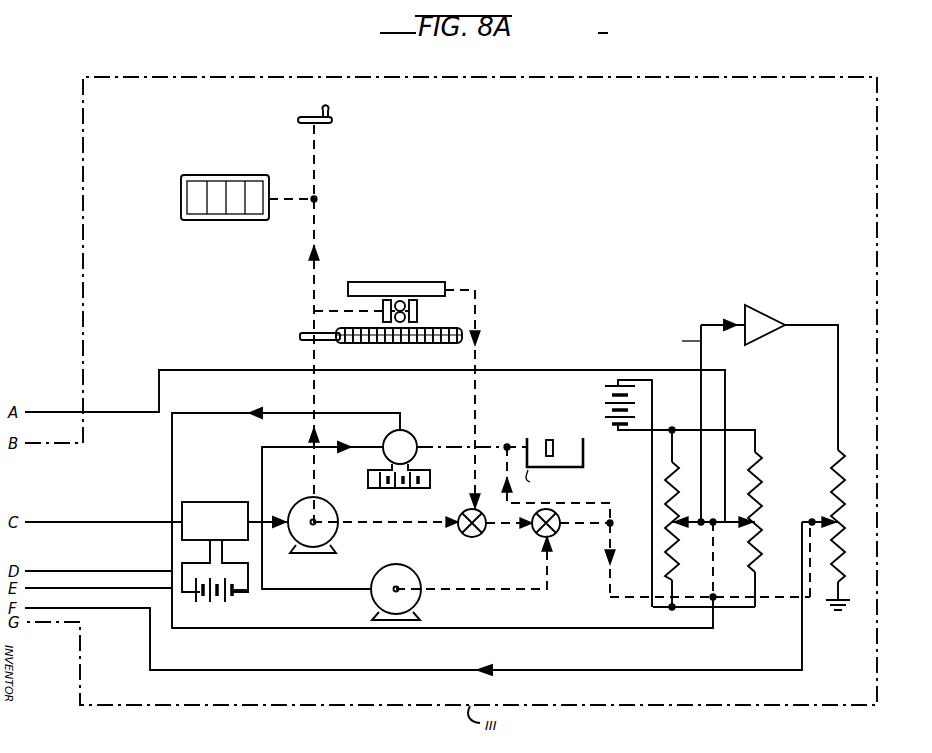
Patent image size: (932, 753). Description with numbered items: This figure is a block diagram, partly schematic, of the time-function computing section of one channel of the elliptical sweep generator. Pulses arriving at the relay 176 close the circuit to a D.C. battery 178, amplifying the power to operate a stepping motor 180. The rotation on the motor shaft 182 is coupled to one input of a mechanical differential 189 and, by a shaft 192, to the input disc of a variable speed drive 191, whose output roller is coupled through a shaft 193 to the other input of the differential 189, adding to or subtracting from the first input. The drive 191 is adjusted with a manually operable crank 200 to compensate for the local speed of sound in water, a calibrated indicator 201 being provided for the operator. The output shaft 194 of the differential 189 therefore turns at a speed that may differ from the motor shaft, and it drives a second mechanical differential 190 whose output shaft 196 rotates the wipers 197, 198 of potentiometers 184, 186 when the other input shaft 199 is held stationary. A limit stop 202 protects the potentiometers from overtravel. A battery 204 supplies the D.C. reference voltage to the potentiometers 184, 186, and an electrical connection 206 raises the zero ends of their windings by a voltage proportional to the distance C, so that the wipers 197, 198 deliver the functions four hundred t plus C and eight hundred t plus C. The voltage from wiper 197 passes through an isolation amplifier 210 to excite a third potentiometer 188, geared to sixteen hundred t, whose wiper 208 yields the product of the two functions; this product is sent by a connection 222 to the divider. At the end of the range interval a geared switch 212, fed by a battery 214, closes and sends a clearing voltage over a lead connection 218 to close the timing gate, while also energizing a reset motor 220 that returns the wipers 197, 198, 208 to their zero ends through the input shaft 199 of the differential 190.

The manually operable crank 200 is at (334, 121).
The calibrated indicator 201 is at (181, 200).
The variable speed drive 191 is at (470, 266).
The shaft 193 is at (478, 318).
The shaft 192 is at (310, 348).
The lead connection 218 is at (235, 405).
The geared switch 212 is at (412, 438).
The battery 214 is at (378, 489).
The relay 176 is at (206, 500).
The D.C. battery 178 is at (228, 602).
The stepping motor 180 is at (300, 508).
The shaft 182 is at (400, 529).
The mechanical differential 189 is at (467, 537).
The mechanical differential 190 is at (524, 510).
The output shaft 194 is at (531, 536).
The output shaft 196 is at (578, 530).
The input shaft 199 is at (547, 568).
The limit stop 202 is at (558, 517).
The reset motor 220 is at (418, 604).
The battery 204 is at (604, 399).
The isolation amplifier 210 is at (775, 318).
The potentiometer 184 is at (668, 553).
The potentiometer 186 is at (758, 476).
The wiper 197 is at (693, 527).
The wiper 198 is at (731, 527).
The electrical connection 206 is at (566, 632).
The wiper 208 is at (820, 520).
The potentiometer 188 is at (843, 562).
The connection 222 is at (110, 610).